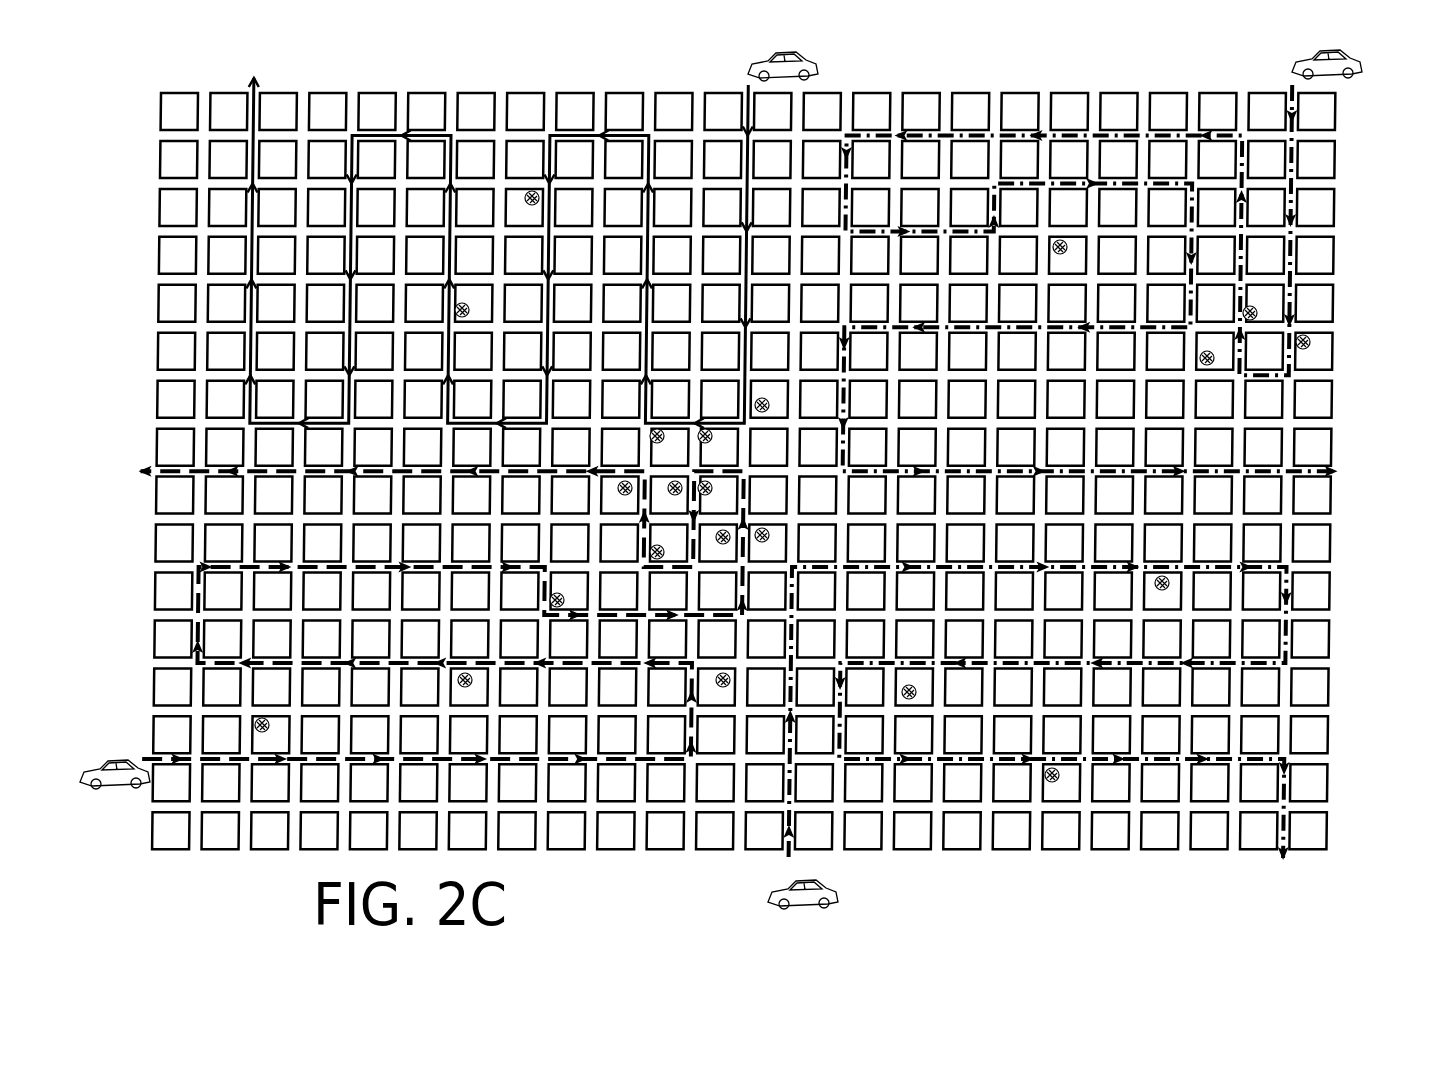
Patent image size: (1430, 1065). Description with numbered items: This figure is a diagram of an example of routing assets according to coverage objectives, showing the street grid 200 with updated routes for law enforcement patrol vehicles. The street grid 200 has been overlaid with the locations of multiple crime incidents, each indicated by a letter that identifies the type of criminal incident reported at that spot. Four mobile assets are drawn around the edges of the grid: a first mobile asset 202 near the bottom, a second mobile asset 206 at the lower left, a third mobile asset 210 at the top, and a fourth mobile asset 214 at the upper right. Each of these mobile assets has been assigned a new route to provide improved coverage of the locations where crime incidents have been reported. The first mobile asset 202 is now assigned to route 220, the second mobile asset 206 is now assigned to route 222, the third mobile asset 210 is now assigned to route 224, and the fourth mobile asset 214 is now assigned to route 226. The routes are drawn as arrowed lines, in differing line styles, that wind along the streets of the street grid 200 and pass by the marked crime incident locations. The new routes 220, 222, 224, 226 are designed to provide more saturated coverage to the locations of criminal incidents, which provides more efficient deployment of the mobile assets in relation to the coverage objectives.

The street grid 200 is at (1135, 884).
The first mobile asset 202 is at (838, 898).
The second mobile asset 206 is at (123, 797).
The third mobile asset 210 is at (808, 66).
The fourth mobile asset 214 is at (1360, 58).
The route 220 is at (790, 856).
The route 222 is at (148, 757).
The route 224 is at (747, 87).
The route 226 is at (1292, 84).